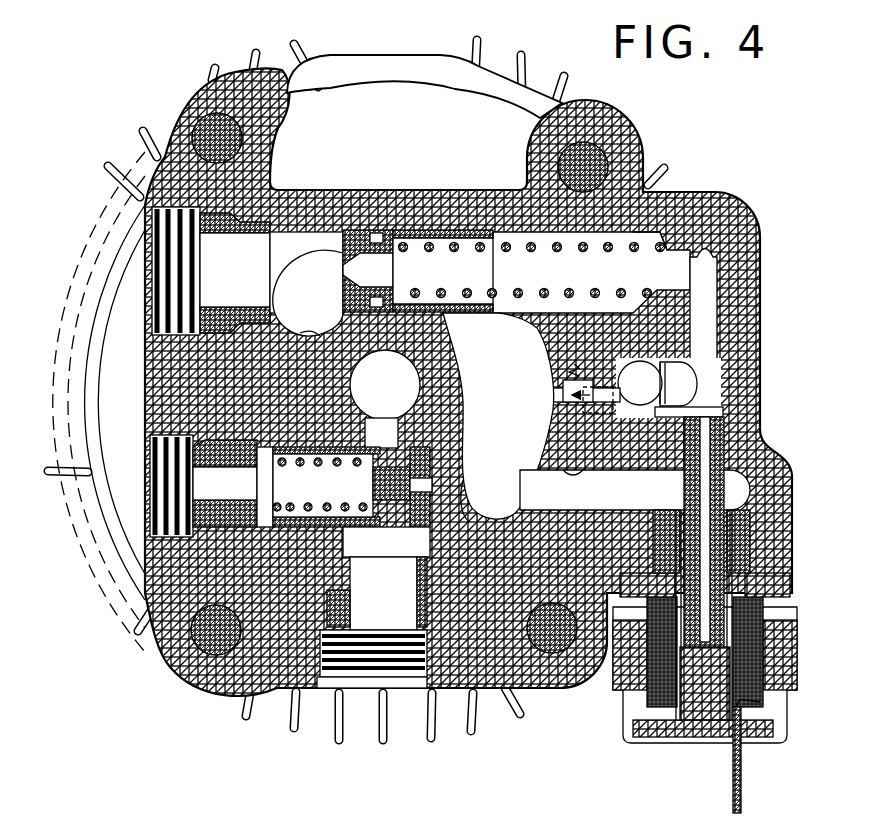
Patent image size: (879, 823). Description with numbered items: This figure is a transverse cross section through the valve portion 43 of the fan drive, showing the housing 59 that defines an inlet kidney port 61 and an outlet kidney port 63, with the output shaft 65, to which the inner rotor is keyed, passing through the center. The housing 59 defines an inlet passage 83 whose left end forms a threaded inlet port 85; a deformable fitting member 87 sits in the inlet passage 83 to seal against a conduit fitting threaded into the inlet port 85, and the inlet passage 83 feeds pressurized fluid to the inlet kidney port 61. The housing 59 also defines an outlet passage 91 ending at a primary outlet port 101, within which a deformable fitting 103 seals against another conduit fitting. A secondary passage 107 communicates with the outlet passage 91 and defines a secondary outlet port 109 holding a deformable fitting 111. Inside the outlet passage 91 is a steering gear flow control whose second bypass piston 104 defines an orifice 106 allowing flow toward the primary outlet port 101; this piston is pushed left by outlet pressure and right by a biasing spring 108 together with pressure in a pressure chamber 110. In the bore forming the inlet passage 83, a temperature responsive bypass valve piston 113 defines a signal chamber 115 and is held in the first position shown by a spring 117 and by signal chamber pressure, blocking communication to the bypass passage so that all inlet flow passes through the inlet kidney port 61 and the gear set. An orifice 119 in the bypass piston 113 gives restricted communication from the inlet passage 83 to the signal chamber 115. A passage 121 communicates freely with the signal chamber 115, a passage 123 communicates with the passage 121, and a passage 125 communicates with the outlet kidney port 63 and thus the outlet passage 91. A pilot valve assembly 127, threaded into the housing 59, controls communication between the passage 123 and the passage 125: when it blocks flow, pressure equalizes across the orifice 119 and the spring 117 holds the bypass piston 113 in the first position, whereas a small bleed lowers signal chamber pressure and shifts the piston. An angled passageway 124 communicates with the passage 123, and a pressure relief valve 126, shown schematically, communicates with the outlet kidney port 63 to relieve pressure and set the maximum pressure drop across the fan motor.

The valve portion 43 is at (364, 48).
The housing 59 is at (713, 192).
The inlet kidney port 61 is at (316, 333).
The outlet kidney port 63 is at (498, 416).
The output shaft 65 is at (380, 385).
The inlet passage 83 is at (296, 230).
The threaded inlet port 85 is at (175, 268).
The deformable fitting member 87 is at (213, 240).
The outlet passage 91 is at (452, 522).
The primary outlet port 101 is at (160, 495).
The deformable fitting 103 is at (213, 458).
The second bypass piston 104 is at (430, 463).
The orifice 106 is at (430, 487).
The secondary passage 107 is at (349, 537).
The biasing spring 108 is at (343, 465).
The secondary outlet port 109 is at (388, 660).
The pressure chamber 110 is at (328, 488).
The deformable fitting 111 is at (343, 610).
The temperature responsive bypass valve piston 113 is at (474, 316).
The signal chamber 115 is at (533, 270).
The spring 117 is at (612, 245).
The orifice 119 is at (345, 272).
The passage 121 is at (689, 254).
The passage 123 is at (707, 332).
The angled passageway 124 is at (662, 477).
The passage 125 is at (588, 468).
The pressure relief valve 126 is at (568, 412).
The pilot valve assembly 127 is at (697, 760).